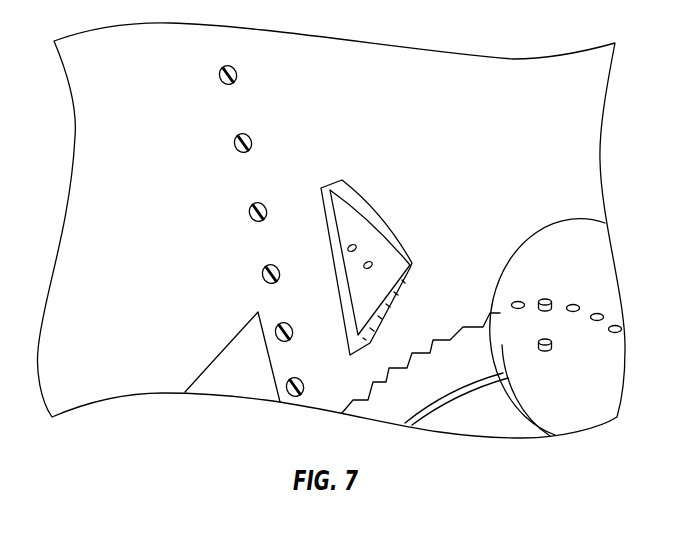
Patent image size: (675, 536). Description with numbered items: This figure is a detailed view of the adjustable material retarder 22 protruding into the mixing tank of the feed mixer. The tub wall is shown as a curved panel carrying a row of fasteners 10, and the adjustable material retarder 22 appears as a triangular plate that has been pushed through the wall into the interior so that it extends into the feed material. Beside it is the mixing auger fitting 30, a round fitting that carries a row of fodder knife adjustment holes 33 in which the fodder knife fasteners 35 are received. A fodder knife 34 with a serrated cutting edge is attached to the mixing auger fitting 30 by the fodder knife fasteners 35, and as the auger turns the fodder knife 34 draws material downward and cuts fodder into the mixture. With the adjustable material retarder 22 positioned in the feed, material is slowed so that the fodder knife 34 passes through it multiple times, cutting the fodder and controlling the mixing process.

The fastening screws 10 is at (241, 137).
The adjustable material retarder 22 is at (378, 230).
The mixing auger fitting 30 is at (556, 315).
The fodder knife adjustment holes 33 is at (574, 303).
The fodder knife 34 is at (473, 345).
The fodder knife fasteners 35 is at (547, 350).